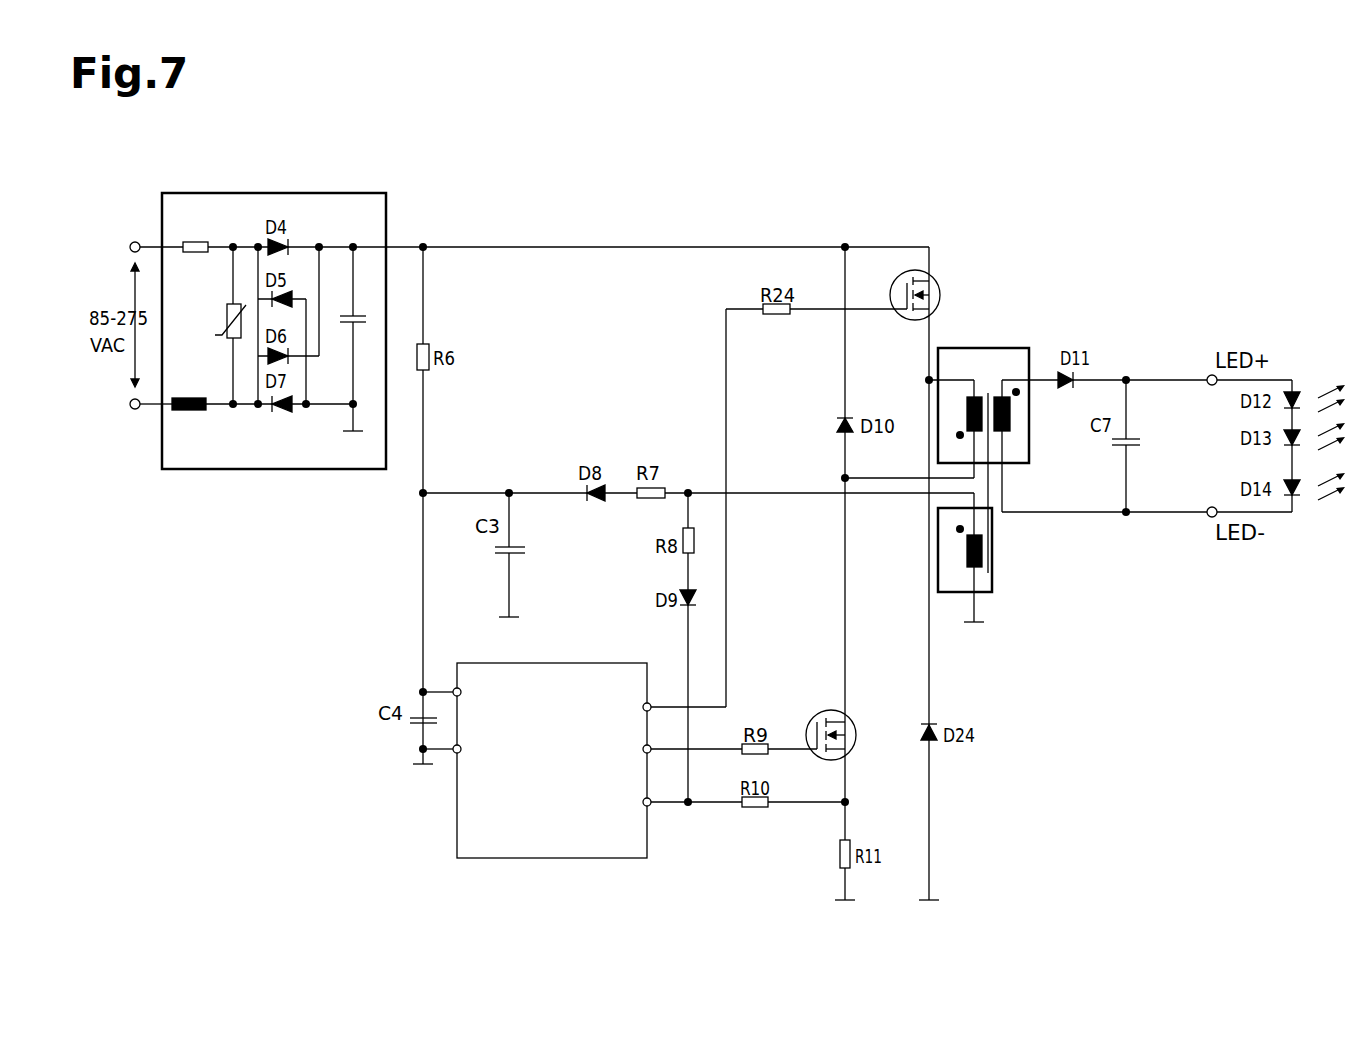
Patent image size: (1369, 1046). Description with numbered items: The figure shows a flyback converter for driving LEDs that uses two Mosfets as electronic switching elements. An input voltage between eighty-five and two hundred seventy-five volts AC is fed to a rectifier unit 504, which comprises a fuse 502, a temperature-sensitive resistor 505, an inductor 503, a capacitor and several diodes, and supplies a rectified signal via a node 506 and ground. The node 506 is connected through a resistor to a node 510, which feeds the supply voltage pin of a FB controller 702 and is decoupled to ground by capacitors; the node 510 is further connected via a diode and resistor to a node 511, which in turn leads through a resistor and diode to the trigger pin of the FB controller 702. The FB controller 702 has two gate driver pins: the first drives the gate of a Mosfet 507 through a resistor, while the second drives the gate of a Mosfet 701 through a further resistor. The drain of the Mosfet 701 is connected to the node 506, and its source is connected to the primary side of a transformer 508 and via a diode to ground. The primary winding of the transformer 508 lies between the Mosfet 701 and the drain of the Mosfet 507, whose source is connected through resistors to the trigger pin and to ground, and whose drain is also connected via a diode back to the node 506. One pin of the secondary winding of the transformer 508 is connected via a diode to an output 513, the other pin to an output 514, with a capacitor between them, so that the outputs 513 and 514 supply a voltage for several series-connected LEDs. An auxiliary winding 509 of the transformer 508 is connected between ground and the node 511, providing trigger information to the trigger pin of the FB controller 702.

The fuse 502 is at (195, 234).
The inductor 503 is at (189, 418).
The rectifier unit 504 is at (195, 470).
The temperature-sensitive resistor 505 is at (211, 325).
The node 506 is at (421, 234).
The Mosfet 507 is at (850, 735).
The transformer 508 is at (1011, 348).
The auxiliary winding 509 is at (993, 580).
The node 510 is at (438, 483).
The node 511 is at (691, 483).
The output 513 is at (1193, 369).
The output 514 is at (1193, 523).
The Mosfet 701 is at (932, 290).
The FB controller 702 is at (465, 828).